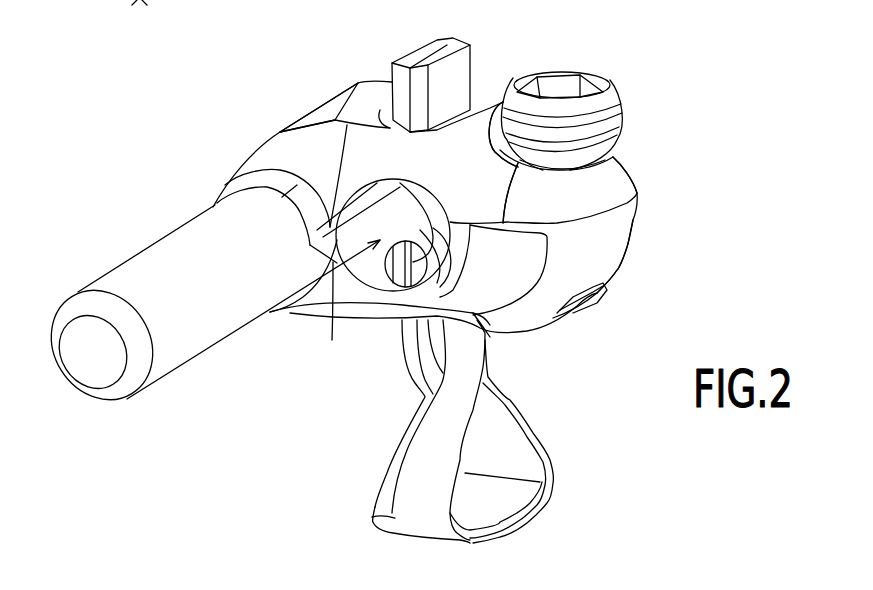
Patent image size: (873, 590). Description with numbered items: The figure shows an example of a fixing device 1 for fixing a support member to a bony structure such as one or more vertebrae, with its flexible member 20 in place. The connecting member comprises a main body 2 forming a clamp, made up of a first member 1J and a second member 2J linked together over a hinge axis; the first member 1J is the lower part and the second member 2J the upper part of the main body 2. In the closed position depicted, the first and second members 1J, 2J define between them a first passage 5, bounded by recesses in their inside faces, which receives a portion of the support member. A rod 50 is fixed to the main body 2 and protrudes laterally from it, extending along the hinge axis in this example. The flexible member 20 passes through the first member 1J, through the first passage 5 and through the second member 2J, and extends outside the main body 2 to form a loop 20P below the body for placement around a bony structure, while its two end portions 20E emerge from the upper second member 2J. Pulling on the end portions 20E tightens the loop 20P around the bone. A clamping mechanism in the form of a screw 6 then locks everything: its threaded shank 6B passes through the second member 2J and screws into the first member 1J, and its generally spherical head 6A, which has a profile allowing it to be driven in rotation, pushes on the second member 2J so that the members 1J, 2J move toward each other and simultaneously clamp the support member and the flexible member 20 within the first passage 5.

The fixing device 1 is at (690, 213).
The first member 1J is at (613, 243).
The main body 2 is at (292, 113).
The second member 2J is at (617, 183).
The first passage 5 is at (337, 330).
The screw 6 is at (616, 90).
The head 6A is at (594, 80).
The shank 6B is at (597, 303).
The flexible member 20 is at (560, 463).
The end portions 20E is at (392, 78).
The loop 20P is at (393, 520).
The rod 50 is at (138, 258).